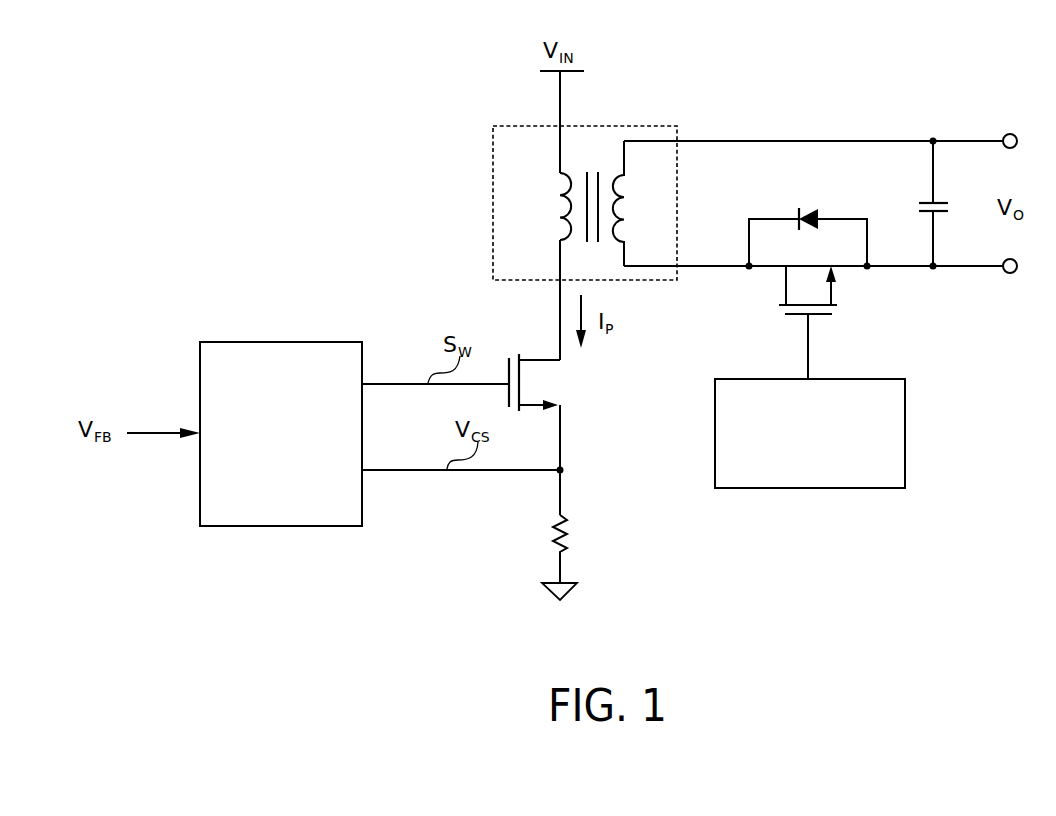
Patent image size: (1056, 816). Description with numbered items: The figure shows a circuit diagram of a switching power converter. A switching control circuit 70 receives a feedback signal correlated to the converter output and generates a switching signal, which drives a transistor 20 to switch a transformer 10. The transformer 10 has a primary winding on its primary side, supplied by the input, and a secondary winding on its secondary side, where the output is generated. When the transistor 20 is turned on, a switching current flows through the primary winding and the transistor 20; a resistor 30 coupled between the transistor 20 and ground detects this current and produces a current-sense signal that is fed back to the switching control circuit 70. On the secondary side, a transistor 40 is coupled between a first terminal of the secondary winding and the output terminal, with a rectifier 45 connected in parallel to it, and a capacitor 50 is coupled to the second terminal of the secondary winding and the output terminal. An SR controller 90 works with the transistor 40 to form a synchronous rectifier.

The transformer 10 is at (585, 226).
The transistor 20 is at (552, 434).
The resistor 30 is at (576, 557).
The transistor 40 is at (828, 322).
The rectifier 45 is at (808, 224).
The capacitor 50 is at (951, 203).
The switching control circuit 70 is at (281, 414).
The SR controller 90 is at (810, 420).